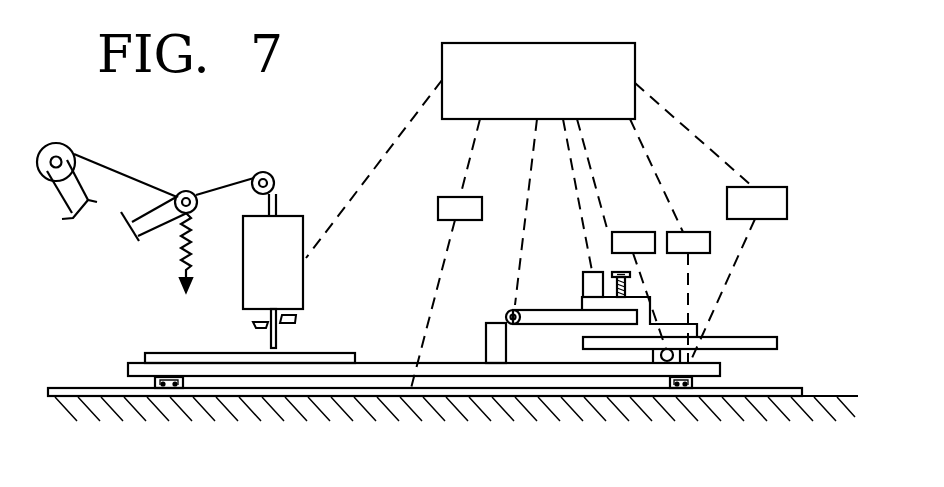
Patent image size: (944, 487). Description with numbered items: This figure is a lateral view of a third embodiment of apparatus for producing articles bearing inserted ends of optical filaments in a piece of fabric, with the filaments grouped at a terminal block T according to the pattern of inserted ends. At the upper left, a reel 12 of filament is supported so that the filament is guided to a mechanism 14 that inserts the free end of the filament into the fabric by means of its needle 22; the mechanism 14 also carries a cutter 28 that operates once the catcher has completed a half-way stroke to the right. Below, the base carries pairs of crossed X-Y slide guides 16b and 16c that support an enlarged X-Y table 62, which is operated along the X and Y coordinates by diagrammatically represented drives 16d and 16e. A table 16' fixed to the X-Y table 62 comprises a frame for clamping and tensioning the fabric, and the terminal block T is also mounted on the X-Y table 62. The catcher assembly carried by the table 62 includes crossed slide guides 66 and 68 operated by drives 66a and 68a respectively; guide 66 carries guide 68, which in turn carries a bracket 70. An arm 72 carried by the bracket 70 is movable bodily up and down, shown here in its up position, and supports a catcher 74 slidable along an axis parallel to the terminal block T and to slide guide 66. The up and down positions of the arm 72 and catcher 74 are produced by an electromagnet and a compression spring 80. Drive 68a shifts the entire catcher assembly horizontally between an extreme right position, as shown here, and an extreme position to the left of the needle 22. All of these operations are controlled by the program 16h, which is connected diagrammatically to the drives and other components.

The reel 12 is at (53, 144).
The mechanism 14 is at (286, 279).
The program 16h is at (568, 90).
The drive 16e is at (438, 208).
The drive 16d is at (788, 203).
The drive 66a is at (633, 232).
The drive 68a is at (688, 232).
The compression spring 80 is at (585, 282).
The bracket 70 is at (582, 303).
The terminal block T is at (492, 322).
The catcher 74 is at (517, 326).
The arm 72 is at (557, 320).
The X slide guide 66 is at (655, 356).
The Y slide guide 68 is at (779, 342).
The X-Y table 62 is at (143, 362).
The needle 22 is at (270, 341).
The cutter 28 is at (297, 318).
The table 16' is at (275, 343).
The slide guide 16c is at (76, 388).
The slide guide 16b is at (163, 390).